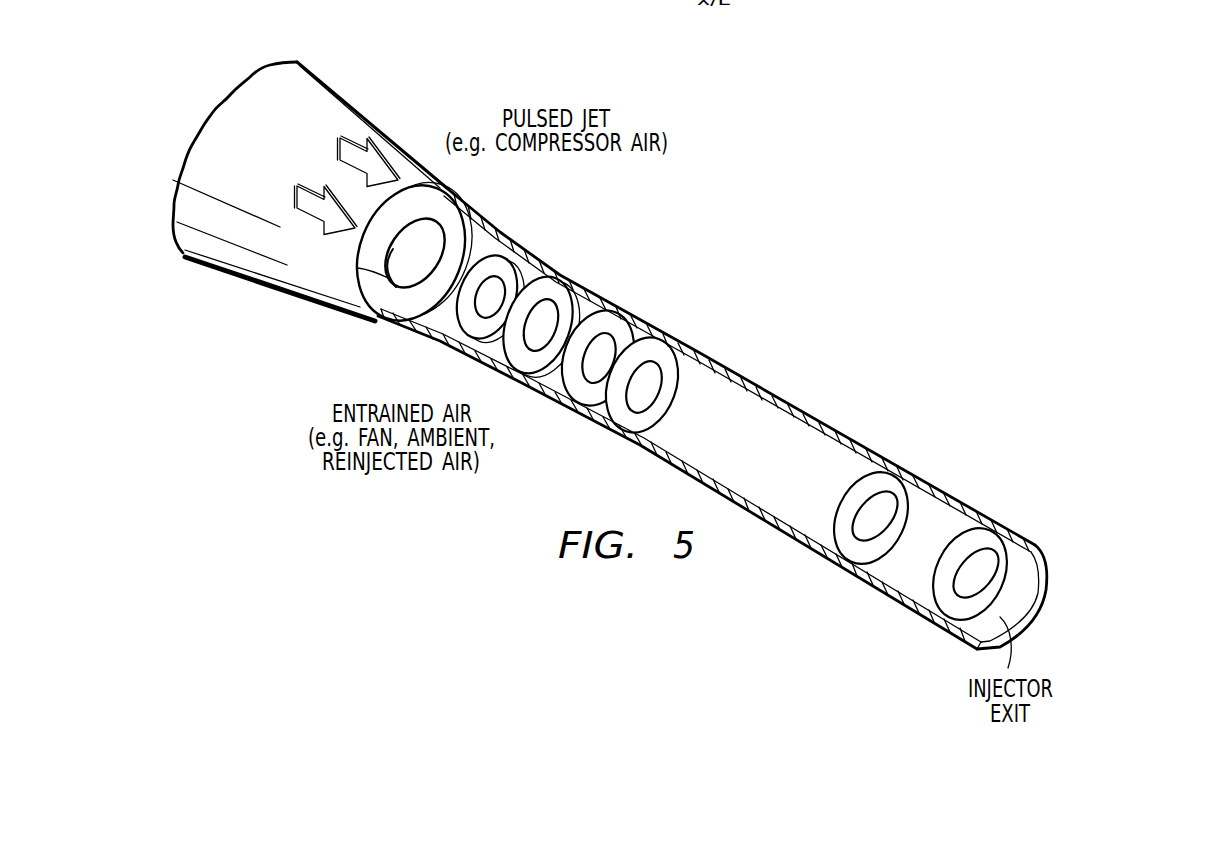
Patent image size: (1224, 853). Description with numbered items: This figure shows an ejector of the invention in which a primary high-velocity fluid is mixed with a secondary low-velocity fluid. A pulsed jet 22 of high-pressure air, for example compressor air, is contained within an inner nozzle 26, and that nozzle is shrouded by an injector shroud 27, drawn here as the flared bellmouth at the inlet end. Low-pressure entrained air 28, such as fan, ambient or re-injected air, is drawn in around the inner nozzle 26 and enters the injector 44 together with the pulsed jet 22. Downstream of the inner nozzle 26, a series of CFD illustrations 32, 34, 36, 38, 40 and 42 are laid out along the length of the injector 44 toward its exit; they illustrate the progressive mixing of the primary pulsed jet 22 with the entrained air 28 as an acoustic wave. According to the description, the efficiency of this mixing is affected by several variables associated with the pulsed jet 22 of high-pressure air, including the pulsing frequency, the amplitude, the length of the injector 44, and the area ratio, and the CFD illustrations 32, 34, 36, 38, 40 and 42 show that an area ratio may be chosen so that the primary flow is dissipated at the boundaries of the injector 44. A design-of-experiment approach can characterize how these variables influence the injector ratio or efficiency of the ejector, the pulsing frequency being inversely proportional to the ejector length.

The pulsed jet 22 is at (422, 238).
The inner nozzle 26 is at (358, 268).
The injector shroud 27 is at (363, 105).
The entrained air 28 is at (408, 300).
The CFD illustration 32 is at (500, 268).
The CFD illustration 34 is at (563, 297).
The CFD illustration 36 is at (620, 327).
The CFD illustration 38 is at (648, 413).
The CFD illustration 40 is at (860, 495).
The CFD illustration 42 is at (958, 552).
The injector 44 is at (793, 403).